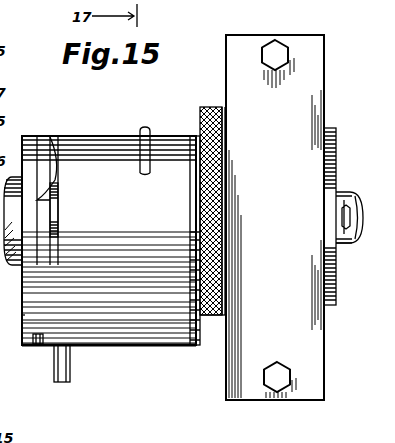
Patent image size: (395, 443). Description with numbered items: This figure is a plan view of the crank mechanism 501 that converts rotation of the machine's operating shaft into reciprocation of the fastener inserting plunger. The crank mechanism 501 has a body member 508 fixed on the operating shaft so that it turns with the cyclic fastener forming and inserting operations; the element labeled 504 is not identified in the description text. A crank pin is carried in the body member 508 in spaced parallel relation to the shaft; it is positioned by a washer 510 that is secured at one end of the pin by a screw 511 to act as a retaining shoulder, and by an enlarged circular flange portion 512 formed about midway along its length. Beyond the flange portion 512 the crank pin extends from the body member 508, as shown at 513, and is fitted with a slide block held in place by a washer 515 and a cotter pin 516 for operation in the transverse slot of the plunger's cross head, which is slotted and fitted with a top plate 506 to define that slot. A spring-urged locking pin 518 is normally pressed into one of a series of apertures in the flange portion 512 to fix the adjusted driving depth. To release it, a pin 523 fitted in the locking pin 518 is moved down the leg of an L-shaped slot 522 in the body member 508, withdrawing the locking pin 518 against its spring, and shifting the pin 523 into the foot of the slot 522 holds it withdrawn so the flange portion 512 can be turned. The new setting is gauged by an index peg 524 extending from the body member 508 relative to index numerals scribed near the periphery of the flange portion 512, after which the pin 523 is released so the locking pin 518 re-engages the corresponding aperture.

The crank mechanism 501 is at (24, 316).
The shaft 504 is at (17, 266).
The top plate 506 is at (305, 38).
The body member 508 is at (85, 140).
The washer 510 is at (50, 152).
The screw 511 is at (35, 150).
The flange portion 512 is at (205, 112).
The extension of crank pin 513 is at (352, 245).
The washer 515 is at (336, 140).
The cotter pin 516 is at (351, 192).
The locking pin 518 is at (222, 318).
The L-shaped slot 522 is at (37, 346).
The pin 523 is at (66, 368).
The index peg 524 is at (145, 127).